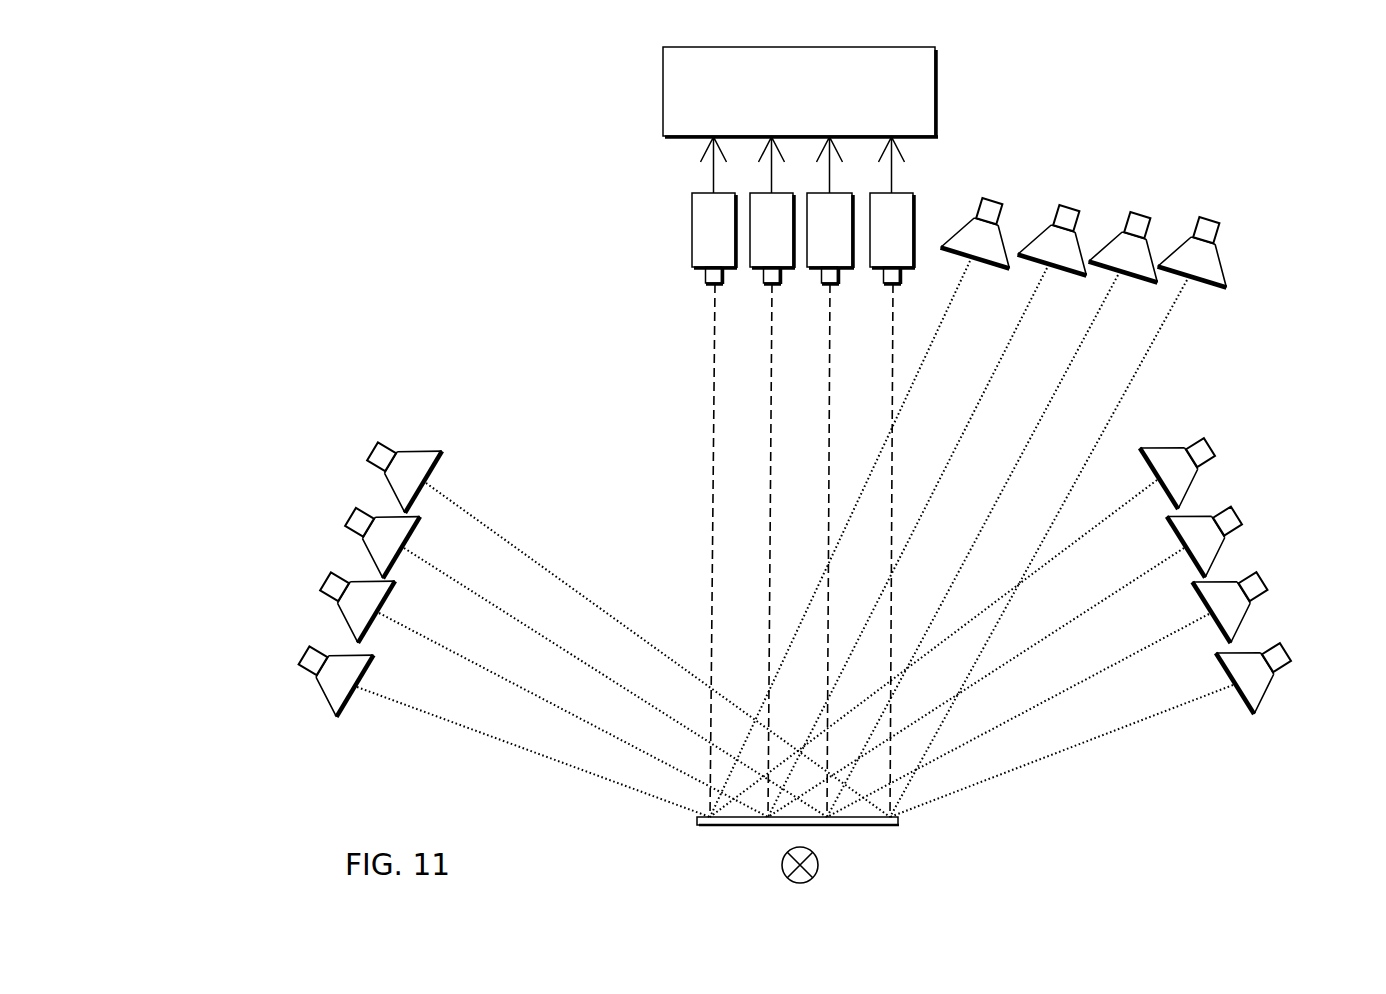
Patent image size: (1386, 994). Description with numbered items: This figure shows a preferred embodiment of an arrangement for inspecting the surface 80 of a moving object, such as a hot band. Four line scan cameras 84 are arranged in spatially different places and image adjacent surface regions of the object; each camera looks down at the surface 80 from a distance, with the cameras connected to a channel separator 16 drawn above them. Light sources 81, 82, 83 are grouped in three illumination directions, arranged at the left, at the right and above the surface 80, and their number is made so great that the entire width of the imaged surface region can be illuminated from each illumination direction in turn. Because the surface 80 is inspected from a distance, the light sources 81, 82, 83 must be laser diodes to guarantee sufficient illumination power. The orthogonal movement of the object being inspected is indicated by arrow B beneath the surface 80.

The channel separator 16 is at (661, 67).
The line scan cameras 84 is at (678, 227).
The light sources 81 is at (303, 653).
The light sources 82 is at (1285, 648).
The light sources 83 is at (1203, 218).
The surface 80 is at (890, 815).
The arrow B is at (821, 860).